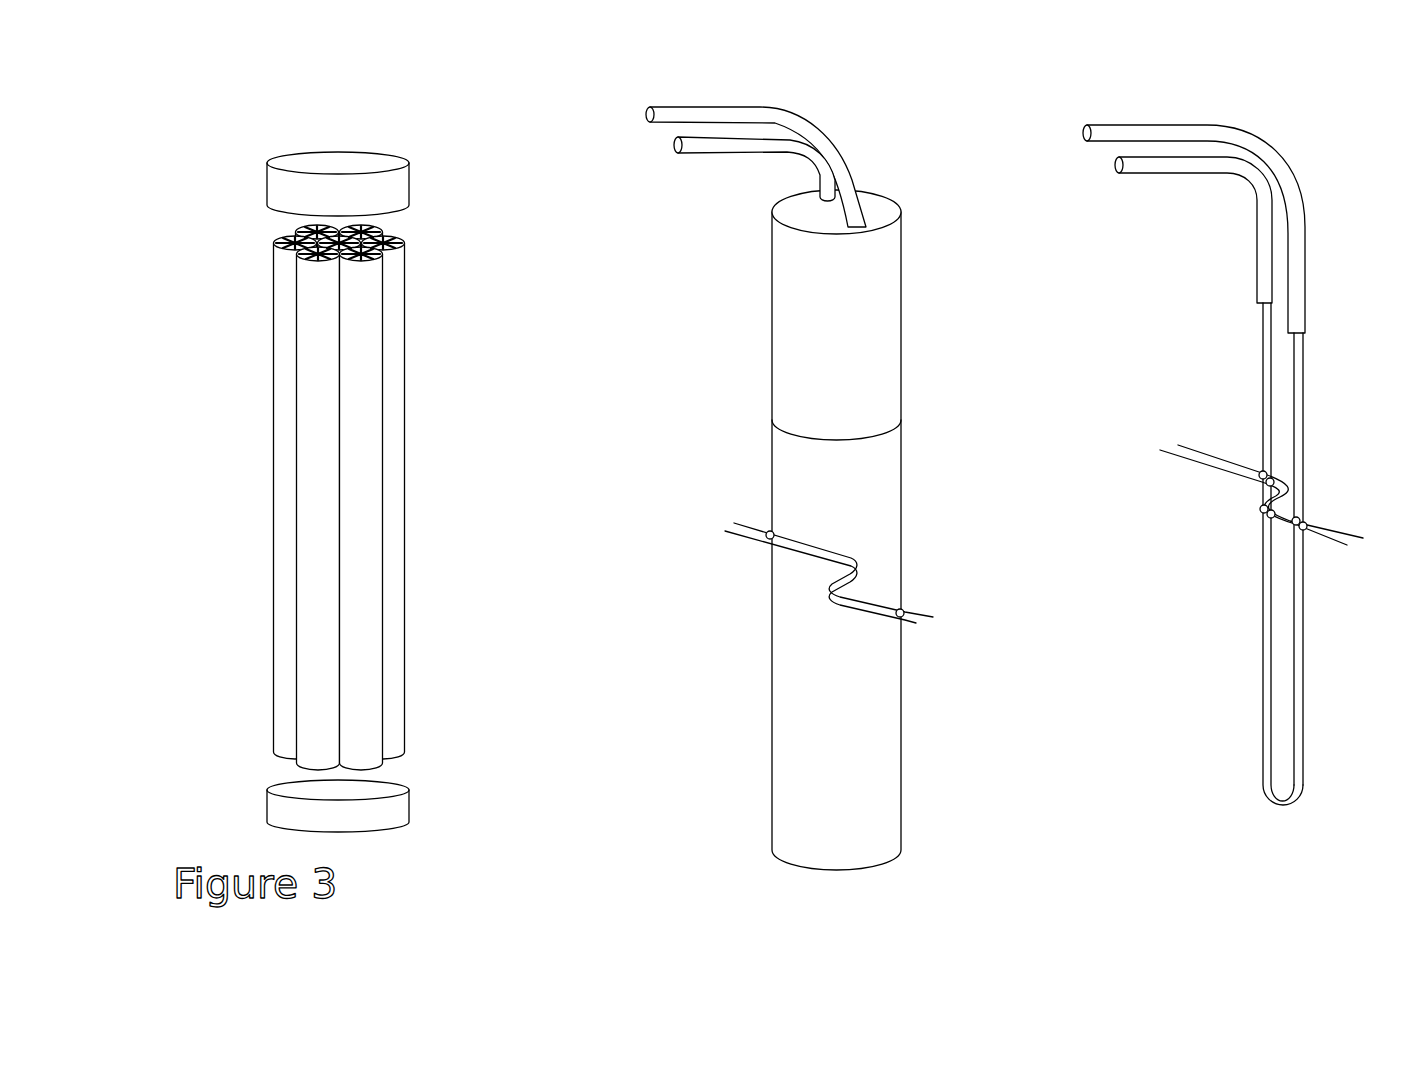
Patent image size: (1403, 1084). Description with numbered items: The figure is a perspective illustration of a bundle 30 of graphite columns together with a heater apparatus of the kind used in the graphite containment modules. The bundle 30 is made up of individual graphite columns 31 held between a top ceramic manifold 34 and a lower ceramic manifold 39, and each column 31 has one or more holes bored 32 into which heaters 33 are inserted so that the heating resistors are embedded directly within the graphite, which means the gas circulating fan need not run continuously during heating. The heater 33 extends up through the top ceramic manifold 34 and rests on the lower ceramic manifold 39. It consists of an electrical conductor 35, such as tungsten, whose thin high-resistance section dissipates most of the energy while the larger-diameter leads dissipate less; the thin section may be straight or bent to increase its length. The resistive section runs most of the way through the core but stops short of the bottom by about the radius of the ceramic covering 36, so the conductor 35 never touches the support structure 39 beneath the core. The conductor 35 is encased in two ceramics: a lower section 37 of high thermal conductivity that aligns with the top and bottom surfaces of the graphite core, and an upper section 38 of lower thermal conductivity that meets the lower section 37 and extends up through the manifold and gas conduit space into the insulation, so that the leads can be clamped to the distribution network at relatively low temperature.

The bundle of graphite columns 30 is at (247, 262).
The graphite column 31 is at (315, 422).
The bored holes 32 is at (397, 240).
The heater 33 is at (722, 315).
The top ceramic manifold 34 is at (283, 190).
The electrical conductor 35 is at (700, 143).
The ceramic covering 36 is at (797, 491).
The lower section 37 is at (868, 747).
The upper section 38 is at (882, 368).
The lower ceramic manifold 39 is at (283, 813).